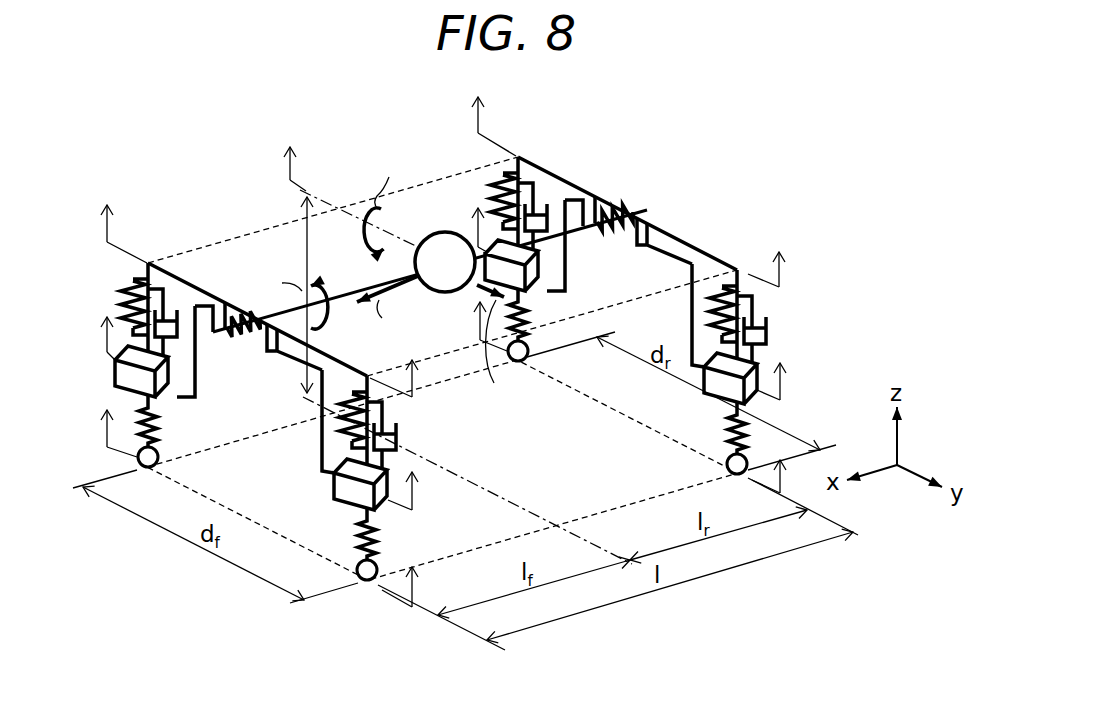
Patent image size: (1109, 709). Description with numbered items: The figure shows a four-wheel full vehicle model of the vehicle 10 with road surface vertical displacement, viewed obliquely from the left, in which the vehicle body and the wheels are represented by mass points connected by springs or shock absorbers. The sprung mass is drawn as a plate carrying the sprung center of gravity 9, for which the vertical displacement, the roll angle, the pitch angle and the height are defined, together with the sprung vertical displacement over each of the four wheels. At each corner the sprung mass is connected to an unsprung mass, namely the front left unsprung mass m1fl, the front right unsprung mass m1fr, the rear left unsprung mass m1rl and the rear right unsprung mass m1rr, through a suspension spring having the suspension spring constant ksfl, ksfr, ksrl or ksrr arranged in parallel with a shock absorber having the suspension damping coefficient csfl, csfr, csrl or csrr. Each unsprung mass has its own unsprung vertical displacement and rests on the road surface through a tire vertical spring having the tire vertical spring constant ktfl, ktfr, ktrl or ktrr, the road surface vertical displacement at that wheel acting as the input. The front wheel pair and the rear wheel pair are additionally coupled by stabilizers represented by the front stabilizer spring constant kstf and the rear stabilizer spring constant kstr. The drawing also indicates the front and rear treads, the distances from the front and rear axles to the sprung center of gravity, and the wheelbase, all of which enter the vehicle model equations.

The vehicle 10 is at (431, 352).
The sprung center of gravity 9 is at (432, 292).
The front stabilizer spring constant kstf is at (243, 341).
The rear stabilizer spring constant kstr is at (614, 230).
The front right suspension spring constant ksfr is at (116, 305).
The front right suspension damping coefficient csfr is at (175, 338).
The front right unsprung mass m1fr is at (115, 370).
The front right tire vertical spring constant ktfr is at (170, 421).
The rear right suspension spring constant ksrr is at (486, 200).
The rear right suspension damping coefficient csrr is at (546, 240).
The rear right unsprung mass m1rr is at (546, 278).
The rear right tire vertical spring constant ktrr is at (528, 350).
The front left suspension spring constant ksfl is at (344, 425).
The front left suspension damping coefficient csfl is at (399, 435).
The front left unsprung mass m1fl is at (337, 484).
The front left tire vertical spring constant ktfl is at (351, 534).
The rear left suspension spring constant ksrl is at (716, 300).
The rear left suspension damping coefficient csrl is at (772, 329).
The rear left unsprung mass m1rl is at (707, 384).
The rear left tire vertical spring constant ktrl is at (722, 428).